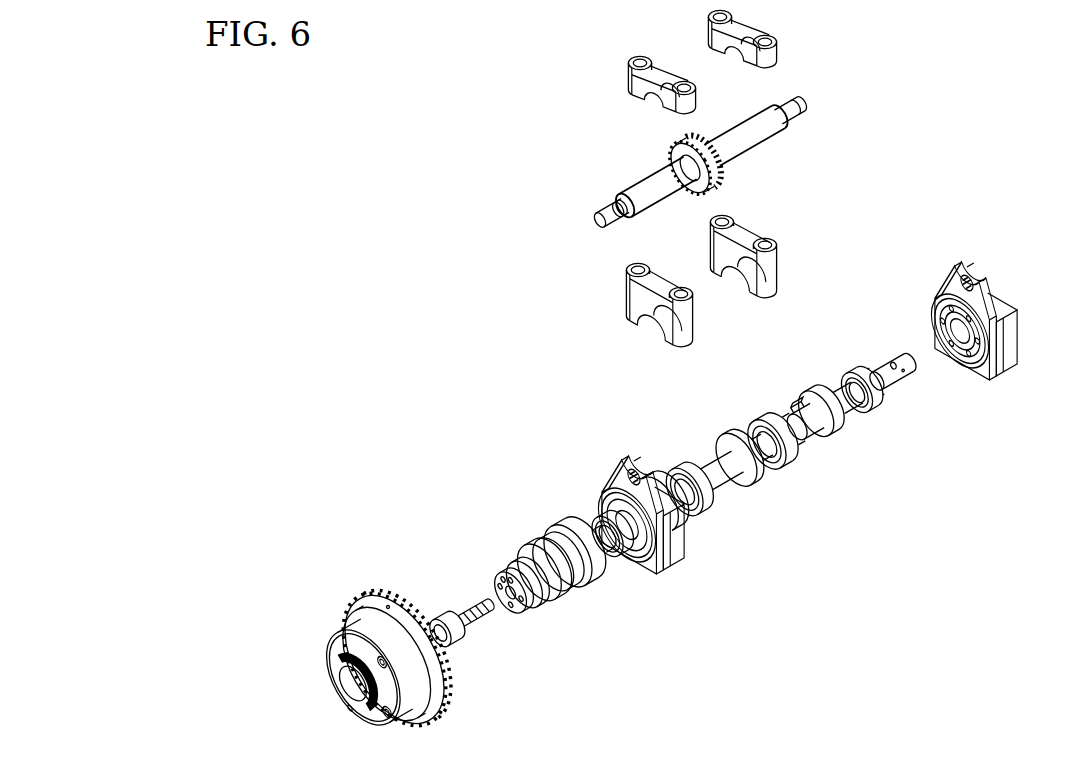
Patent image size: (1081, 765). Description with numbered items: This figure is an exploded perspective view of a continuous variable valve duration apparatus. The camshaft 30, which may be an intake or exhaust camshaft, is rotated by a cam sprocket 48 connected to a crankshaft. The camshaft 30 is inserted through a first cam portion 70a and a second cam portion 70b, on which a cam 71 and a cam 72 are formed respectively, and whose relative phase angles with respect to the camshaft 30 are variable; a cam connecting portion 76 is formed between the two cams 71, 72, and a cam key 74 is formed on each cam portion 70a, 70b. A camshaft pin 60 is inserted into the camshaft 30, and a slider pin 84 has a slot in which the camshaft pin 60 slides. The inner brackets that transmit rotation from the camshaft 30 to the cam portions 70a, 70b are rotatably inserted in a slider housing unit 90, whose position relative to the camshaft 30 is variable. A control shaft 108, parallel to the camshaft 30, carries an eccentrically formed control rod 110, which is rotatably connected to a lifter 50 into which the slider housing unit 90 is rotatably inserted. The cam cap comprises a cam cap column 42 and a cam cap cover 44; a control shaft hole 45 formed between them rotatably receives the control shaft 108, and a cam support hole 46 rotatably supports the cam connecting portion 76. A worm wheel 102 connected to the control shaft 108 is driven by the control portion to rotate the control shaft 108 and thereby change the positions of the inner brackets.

The camshaft 30 is at (725, 477).
The cam cap column 42 is at (772, 268).
The cam cap cover 44 is at (778, 35).
The control shaft hole 45 is at (743, 47).
The cam support hole 46 is at (733, 278).
The cam sprocket 48 is at (368, 594).
The lifter 50 is at (632, 468).
The camshaft pin 60 is at (957, 360).
The first cam portion 70a is at (622, 572).
The second cam portion 70b is at (657, 463).
The cam 71 is at (570, 530).
The cam 72 is at (625, 545).
The cam key 74 is at (800, 398).
The cam connecting portion 76 is at (597, 520).
The slider pin 84 is at (943, 348).
The slider housing unit 90 is at (669, 565).
The worm wheel 102 is at (677, 152).
The control shaft 108 is at (750, 133).
The control rod 110 is at (610, 213).